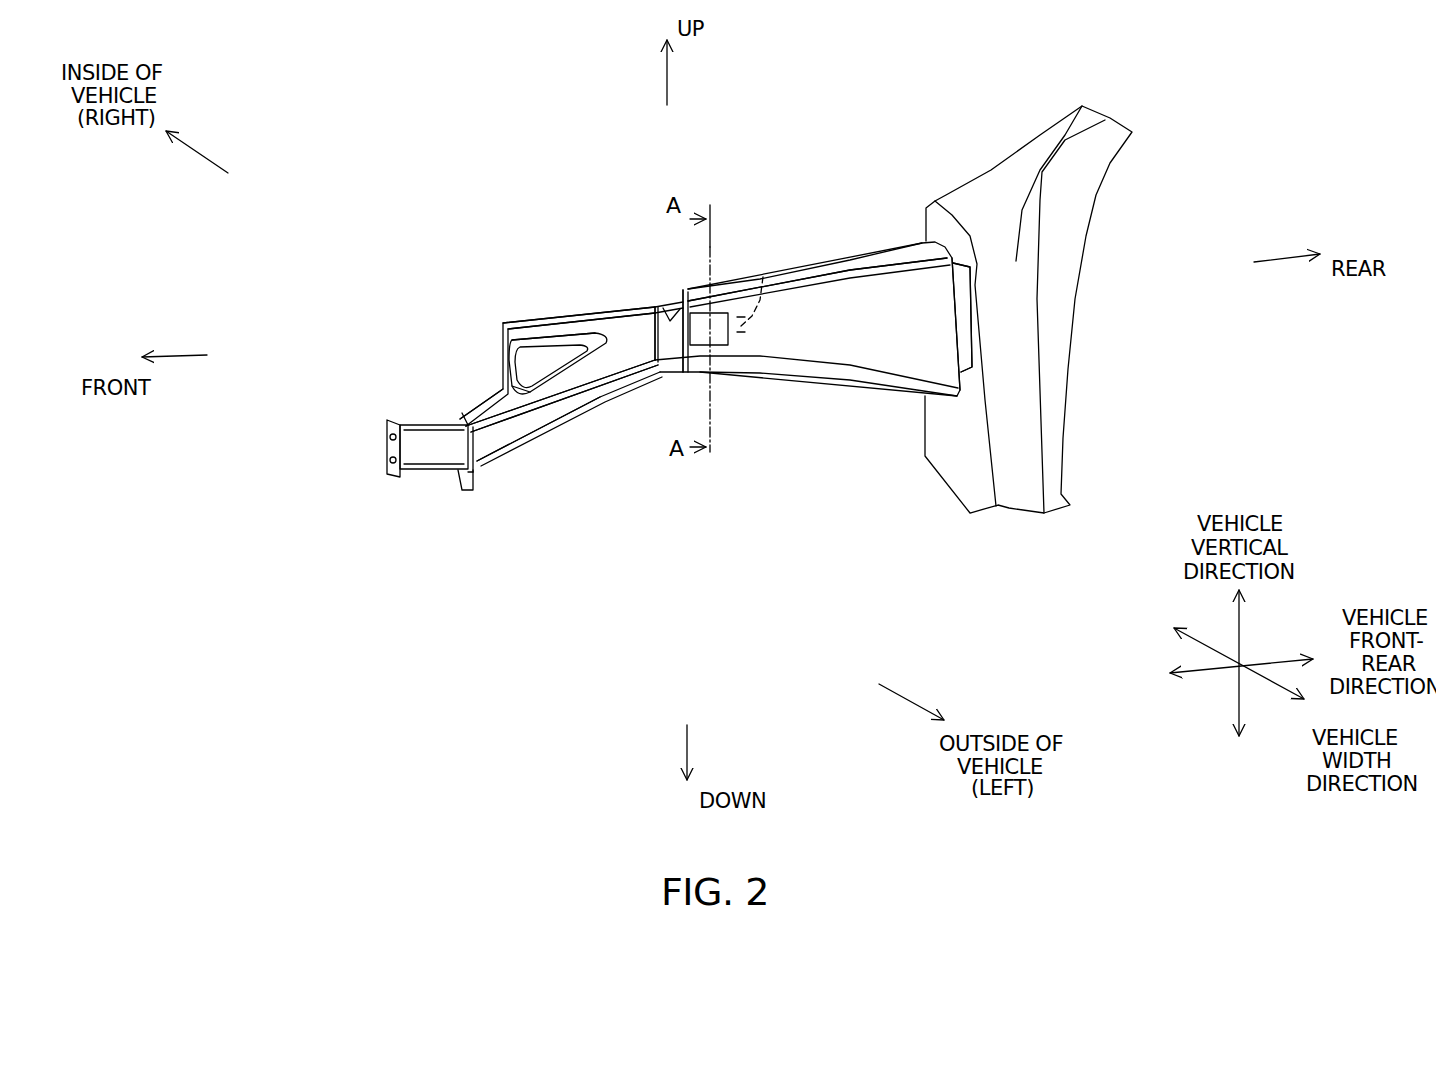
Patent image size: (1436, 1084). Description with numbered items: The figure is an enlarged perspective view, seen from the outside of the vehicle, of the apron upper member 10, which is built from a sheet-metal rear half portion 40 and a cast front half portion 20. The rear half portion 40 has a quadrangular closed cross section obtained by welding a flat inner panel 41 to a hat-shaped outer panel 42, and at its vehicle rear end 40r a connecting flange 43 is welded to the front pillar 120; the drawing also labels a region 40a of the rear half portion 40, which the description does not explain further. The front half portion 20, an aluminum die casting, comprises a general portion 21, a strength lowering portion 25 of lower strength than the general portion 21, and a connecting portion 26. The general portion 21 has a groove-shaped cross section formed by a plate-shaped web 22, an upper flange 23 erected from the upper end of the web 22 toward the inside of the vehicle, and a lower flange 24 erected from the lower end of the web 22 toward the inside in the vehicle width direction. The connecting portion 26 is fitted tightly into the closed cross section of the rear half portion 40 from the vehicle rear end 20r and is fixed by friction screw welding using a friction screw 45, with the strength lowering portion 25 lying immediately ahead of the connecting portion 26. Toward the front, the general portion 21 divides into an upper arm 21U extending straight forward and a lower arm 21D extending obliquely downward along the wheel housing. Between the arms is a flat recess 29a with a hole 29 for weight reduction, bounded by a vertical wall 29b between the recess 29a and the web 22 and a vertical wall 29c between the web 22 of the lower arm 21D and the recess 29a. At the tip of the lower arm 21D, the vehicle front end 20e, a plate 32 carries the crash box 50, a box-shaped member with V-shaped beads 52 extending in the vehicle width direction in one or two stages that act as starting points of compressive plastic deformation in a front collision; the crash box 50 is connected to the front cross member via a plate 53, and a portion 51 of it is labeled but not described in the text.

The apron upper member 10 is at (184, 303).
The front half portion 20 is at (564, 521).
The vehicle front end of the front half portion 20e is at (474, 527).
The vehicle rear end of the front half portion 20r is at (769, 227).
The general portion 21 is at (562, 491).
The upper arm 21U is at (542, 326).
The lower arm 21D is at (538, 551).
The web 22 is at (667, 445).
The upper flange 23 is at (563, 254).
The lower flange 24 is at (564, 510).
The strength lowering portion 25 is at (581, 261).
The connecting portion 26 is at (759, 250).
The hole 29 is at (448, 307).
The recess 29a is at (439, 323).
The vertical wall 29b is at (471, 272).
The vertical wall 29c is at (401, 348).
The plate 32 is at (442, 577).
The rear half portion 40 is at (813, 402).
The front end of rear bracket 40a is at (627, 264).
The vehicle rear end of the rear half portion 40r is at (980, 220).
The inner panel 41 is at (805, 192).
The outer panel 42 is at (828, 466).
The connecting flange 43 is at (1000, 434).
The friction screw 45 is at (817, 180).
The crash box 50 is at (366, 516).
The bracket body 51 is at (418, 533).
The beads 52 is at (374, 386).
The plate 53 is at (324, 498).
The front pillar 120 is at (1075, 309).